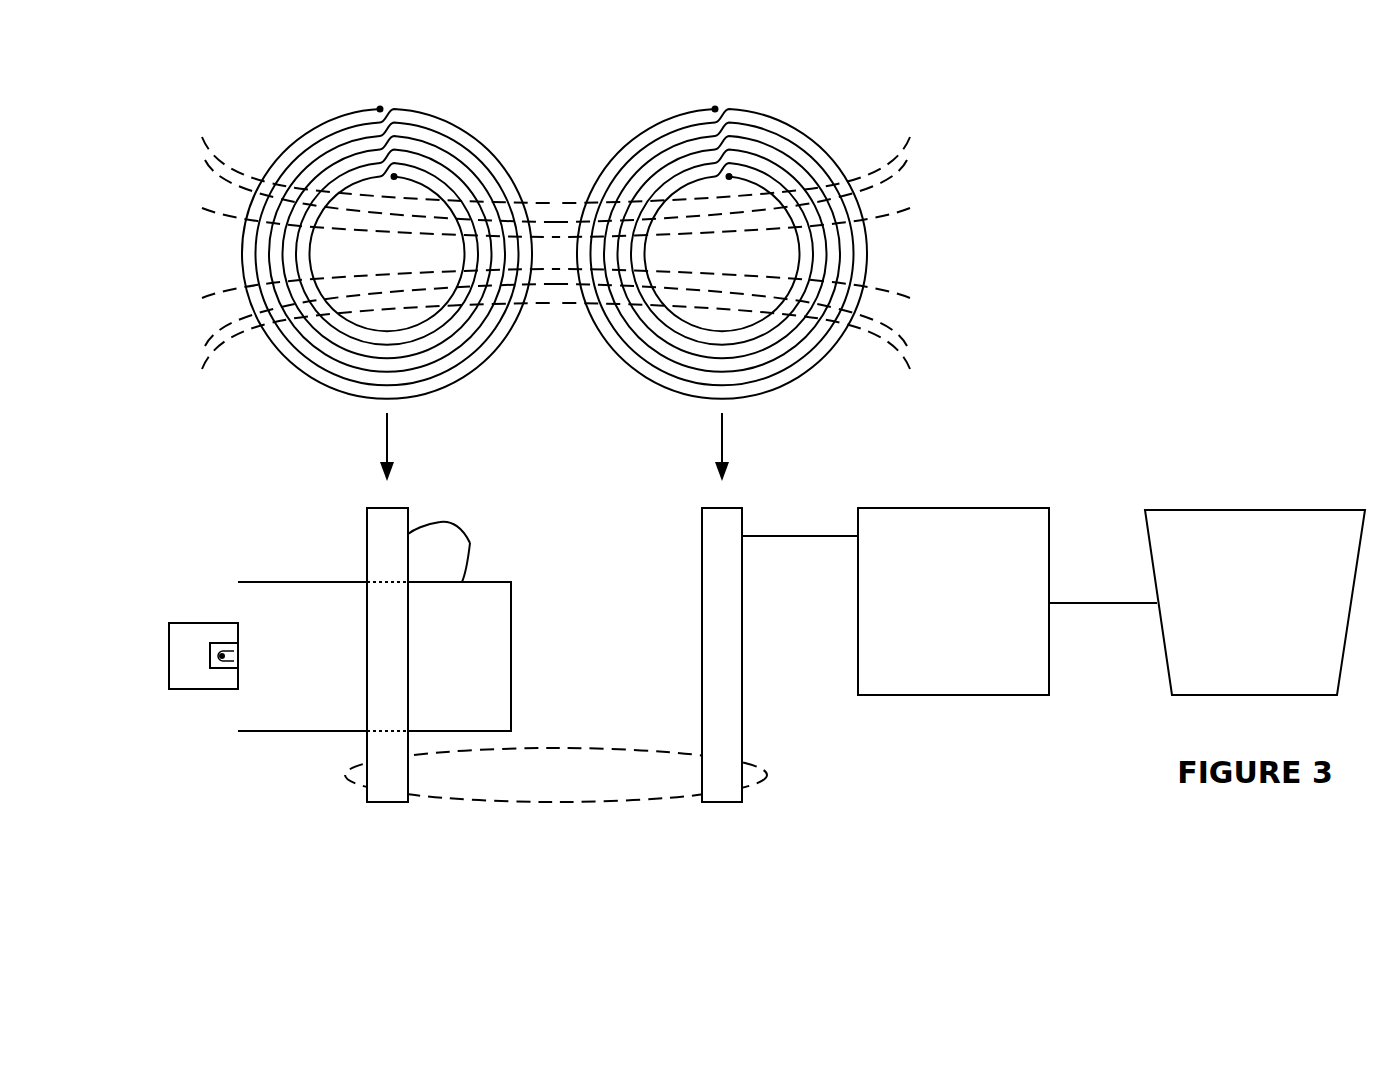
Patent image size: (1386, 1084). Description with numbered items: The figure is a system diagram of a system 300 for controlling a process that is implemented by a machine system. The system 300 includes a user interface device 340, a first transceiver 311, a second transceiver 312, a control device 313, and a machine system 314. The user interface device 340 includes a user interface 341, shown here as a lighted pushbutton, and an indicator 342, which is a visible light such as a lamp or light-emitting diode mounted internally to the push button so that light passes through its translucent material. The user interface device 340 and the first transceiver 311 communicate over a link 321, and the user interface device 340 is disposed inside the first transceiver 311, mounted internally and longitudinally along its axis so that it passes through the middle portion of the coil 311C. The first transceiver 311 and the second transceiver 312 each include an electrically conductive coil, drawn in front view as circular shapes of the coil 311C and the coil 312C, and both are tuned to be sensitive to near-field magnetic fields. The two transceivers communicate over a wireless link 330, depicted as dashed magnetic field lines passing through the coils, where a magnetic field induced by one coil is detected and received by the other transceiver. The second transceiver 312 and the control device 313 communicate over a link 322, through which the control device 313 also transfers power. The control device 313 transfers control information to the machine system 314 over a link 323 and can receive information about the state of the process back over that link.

The system 300 is at (1167, 224).
The first transceiver 311 is at (397, 803).
The coil 311C is at (490, 365).
The second transceiver 312 is at (733, 803).
The coil 312C is at (817, 365).
The control device 313 is at (936, 641).
The machine system 314 is at (1236, 640).
The link 321 is at (470, 543).
The link 322 is at (777, 536).
The link 323 is at (1073, 603).
The wireless link 330 is at (938, 353).
The user interface device 340 is at (313, 731).
The user interface 341 is at (178, 623).
The indicator 342 is at (220, 643).